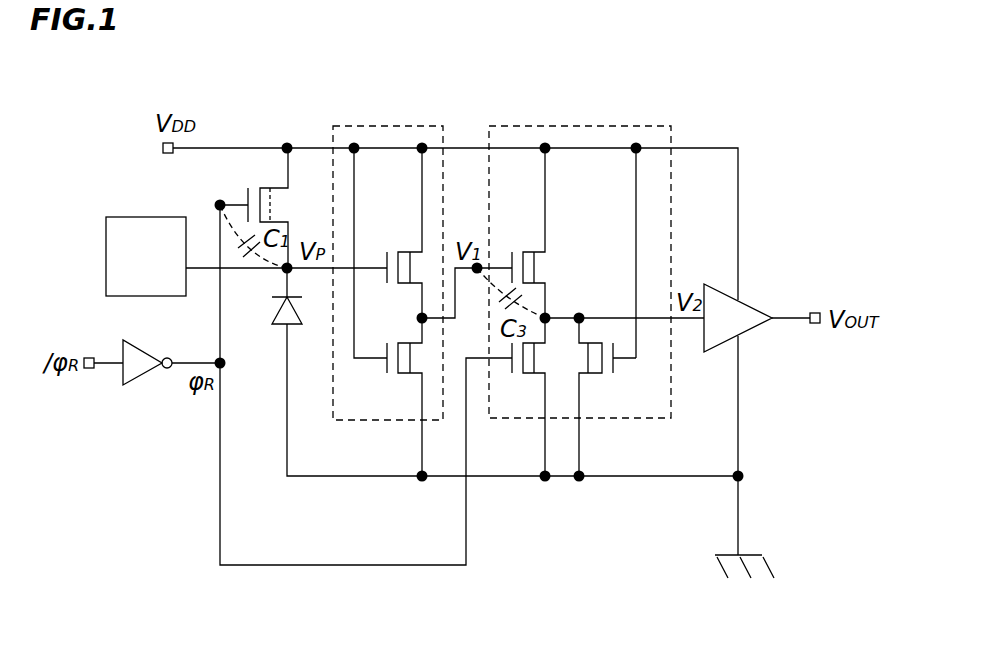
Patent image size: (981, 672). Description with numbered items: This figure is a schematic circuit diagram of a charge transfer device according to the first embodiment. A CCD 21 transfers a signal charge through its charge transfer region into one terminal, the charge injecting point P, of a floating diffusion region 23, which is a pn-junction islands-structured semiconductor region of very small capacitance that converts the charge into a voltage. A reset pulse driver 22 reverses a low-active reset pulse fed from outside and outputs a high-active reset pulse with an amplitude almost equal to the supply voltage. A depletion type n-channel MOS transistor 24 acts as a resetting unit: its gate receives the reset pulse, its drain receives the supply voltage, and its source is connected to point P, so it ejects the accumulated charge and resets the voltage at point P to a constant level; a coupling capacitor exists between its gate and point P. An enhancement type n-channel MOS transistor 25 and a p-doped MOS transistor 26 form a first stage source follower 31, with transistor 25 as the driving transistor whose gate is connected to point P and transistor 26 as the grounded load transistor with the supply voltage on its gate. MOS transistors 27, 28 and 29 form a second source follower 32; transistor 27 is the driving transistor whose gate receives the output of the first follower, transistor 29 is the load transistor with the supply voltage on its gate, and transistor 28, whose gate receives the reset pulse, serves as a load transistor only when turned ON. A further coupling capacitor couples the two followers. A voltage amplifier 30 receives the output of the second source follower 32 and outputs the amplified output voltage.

The CCD 21 is at (121, 216).
The reset pulse driver 22 is at (123, 378).
The floating diffusion region 23 is at (297, 330).
The depletion type n-channel MOS transistor 24 is at (280, 188).
The enhancement type n-channel MOS transistor 25 is at (410, 252).
The enhancement type n-channel MOS transistor doped with p-type impurity 26 is at (410, 375).
The enhancement type n-channel MOS transistor doped with p-type impurity 27 is at (531, 268).
The enhancement type n-channel MOS transistor doped with p-type impurity 28 is at (533, 375).
The enhancement type n-channel MOS transistor doped with p-type impurity 29 is at (583, 378).
The voltage amplifier 30 is at (712, 350).
The first stage source follower 31 is at (350, 420).
The second source follower 32 is at (570, 125).